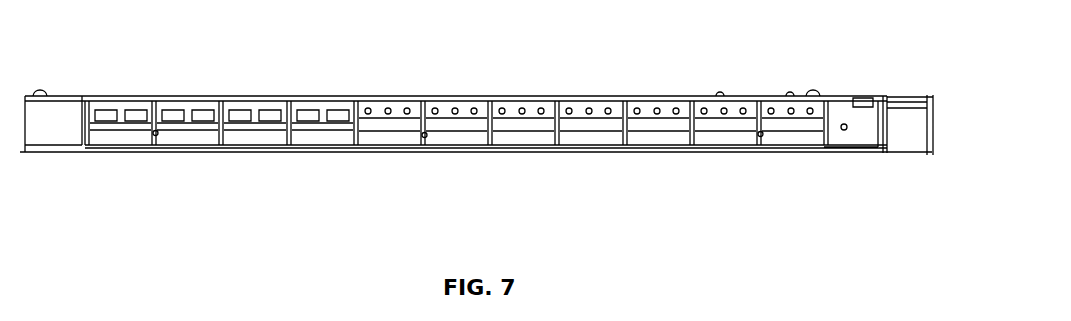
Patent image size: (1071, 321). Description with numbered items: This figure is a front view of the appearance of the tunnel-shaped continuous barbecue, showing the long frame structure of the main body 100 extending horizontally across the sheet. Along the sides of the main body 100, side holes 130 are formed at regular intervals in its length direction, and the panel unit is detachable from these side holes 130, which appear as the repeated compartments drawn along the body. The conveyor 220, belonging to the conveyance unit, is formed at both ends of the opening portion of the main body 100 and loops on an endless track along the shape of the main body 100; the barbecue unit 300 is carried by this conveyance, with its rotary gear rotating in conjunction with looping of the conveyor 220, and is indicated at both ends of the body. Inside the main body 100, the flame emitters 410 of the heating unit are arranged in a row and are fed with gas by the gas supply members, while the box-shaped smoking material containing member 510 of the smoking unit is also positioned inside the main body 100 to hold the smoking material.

The main body 100 is at (178, 84).
The side holes 130 is at (246, 147).
The conveyor 220 is at (120, 148).
The barbecue unit 300 is at (40, 92).
The flame emitters 410 is at (405, 107).
The smoking material containing member 510 is at (304, 108).